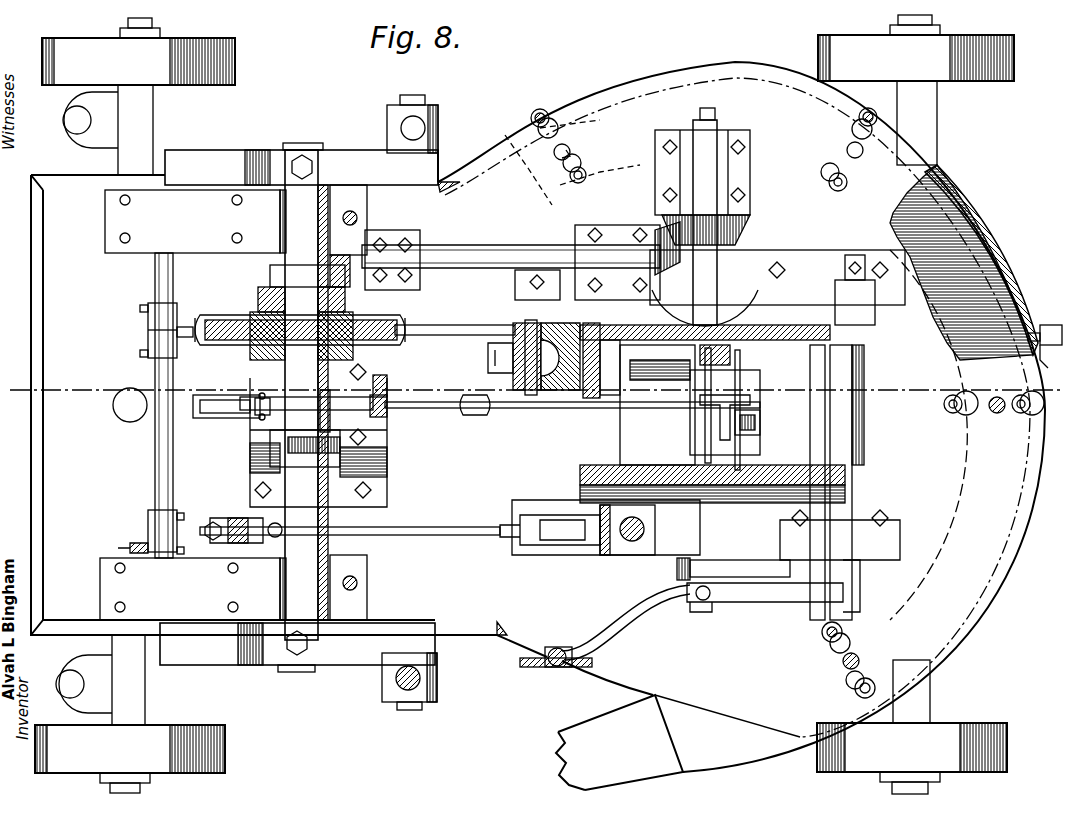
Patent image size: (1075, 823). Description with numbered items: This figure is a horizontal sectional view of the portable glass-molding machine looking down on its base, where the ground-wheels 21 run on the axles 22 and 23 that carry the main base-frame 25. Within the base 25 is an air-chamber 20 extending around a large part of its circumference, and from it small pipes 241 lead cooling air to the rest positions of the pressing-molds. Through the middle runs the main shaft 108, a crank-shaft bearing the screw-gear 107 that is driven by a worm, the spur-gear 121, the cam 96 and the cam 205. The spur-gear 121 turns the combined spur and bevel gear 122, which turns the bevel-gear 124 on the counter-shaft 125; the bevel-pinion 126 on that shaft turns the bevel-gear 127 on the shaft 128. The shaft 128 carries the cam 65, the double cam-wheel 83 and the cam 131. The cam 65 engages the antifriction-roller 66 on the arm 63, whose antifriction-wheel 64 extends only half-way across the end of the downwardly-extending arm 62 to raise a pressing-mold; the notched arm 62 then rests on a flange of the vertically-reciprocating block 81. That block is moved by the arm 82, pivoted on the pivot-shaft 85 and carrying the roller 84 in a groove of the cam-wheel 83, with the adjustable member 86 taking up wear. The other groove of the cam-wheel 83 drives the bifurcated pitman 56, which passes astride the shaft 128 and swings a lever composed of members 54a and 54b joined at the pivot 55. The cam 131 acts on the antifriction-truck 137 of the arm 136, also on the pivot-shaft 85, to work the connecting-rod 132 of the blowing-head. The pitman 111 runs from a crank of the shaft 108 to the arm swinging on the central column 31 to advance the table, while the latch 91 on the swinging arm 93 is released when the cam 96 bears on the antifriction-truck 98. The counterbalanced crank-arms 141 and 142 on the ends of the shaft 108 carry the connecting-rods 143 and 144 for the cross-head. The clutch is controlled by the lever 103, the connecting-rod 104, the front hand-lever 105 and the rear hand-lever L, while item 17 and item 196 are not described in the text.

The stud 17 is at (1042, 340).
The air-chamber 20 is at (985, 245).
The ground-wheels 21 is at (236, 57).
The axle 22 is at (153, 128).
The axle 23 is at (945, 140).
The main base-frame 25 is at (45, 321).
The central column 31 is at (860, 340).
The lever-arm member 54a is at (514, 330).
The lever-arm member 54b is at (492, 347).
The pivot 55 is at (532, 396).
The pitman 56 is at (607, 330).
The downwardly-extending arm 62 is at (566, 146).
The arm 63 is at (608, 622).
The antifriction-wheel 64 is at (540, 668).
The cam 65 is at (790, 568).
The antifriction-roller 66 is at (675, 572).
The vertically-reciprocating block 81 is at (392, 412).
The arm 82 is at (615, 408).
The double cam-wheel 83 is at (668, 408).
The roller 84 is at (704, 400).
The pivot-shaft 85 is at (855, 360).
The member 86 is at (442, 402).
The latch 91 is at (200, 418).
The swinging arm 93 is at (209, 398).
The cam 96 is at (380, 388).
The antifriction-truck 98 is at (260, 412).
The lever 103 is at (148, 332).
The connecting-rod 104 is at (442, 330).
The hand-lever 105 is at (1052, 325).
The screw-gear 107 is at (228, 316).
The main shaft 108 is at (357, 218).
The pitman 111 is at (420, 528).
The spur-gear 121 is at (262, 290).
The combined spur and bevel gear 122 is at (265, 284).
The bevel-gear 124 is at (367, 282).
The counter-shaft 125 is at (473, 245).
The bevel-pinion 126 is at (656, 240).
The bevel-gear 127 is at (742, 238).
The shaft 128 is at (712, 120).
The cam 131 is at (748, 436).
The connecting-rod 132 is at (705, 392).
The arm 136 is at (800, 450).
The antifriction-truck 137 is at (738, 472).
The crank-arm 141 is at (345, 667).
The crank-arm 142 is at (345, 160).
The connecting-rod 143 is at (438, 696).
The connecting-rod 144 is at (433, 117).
The sleeve 196 is at (325, 268).
The cam 205 is at (330, 435).
The pipes 241 is at (538, 110).
The hand-lever L is at (116, 550).